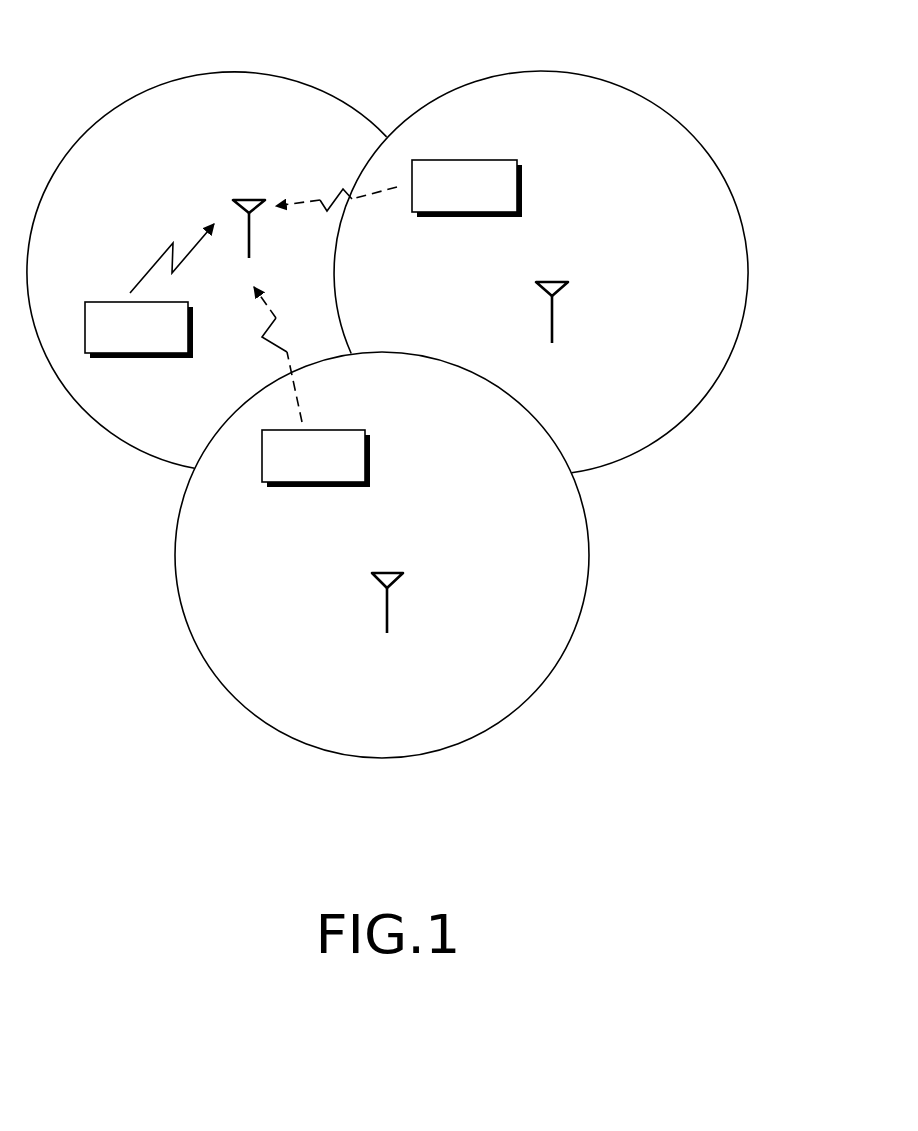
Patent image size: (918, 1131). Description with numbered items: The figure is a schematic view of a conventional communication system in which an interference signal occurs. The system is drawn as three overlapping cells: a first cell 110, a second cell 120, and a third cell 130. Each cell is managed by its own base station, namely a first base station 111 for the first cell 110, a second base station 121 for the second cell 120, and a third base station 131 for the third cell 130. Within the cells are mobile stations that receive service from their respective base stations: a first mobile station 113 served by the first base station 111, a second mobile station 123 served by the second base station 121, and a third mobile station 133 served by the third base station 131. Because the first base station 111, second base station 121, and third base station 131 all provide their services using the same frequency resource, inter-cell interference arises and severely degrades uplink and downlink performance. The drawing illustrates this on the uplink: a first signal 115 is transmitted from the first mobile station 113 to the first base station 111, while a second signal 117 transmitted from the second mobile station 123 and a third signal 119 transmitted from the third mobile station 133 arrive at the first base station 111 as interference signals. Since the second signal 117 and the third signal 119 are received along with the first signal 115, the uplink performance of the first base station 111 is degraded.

The first cell 110 is at (233, 72).
The first Base Station 111 is at (251, 234).
The first MS 113 is at (141, 358).
The first signal 115 is at (152, 270).
The second signal 117 is at (378, 192).
The third signal 119 is at (267, 312).
The second cell 120 is at (541, 72).
The second BS 121 is at (554, 318).
The second MS 123 is at (522, 188).
The third cell 130 is at (592, 553).
The third BS 131 is at (389, 608).
The third MS 133 is at (371, 456).